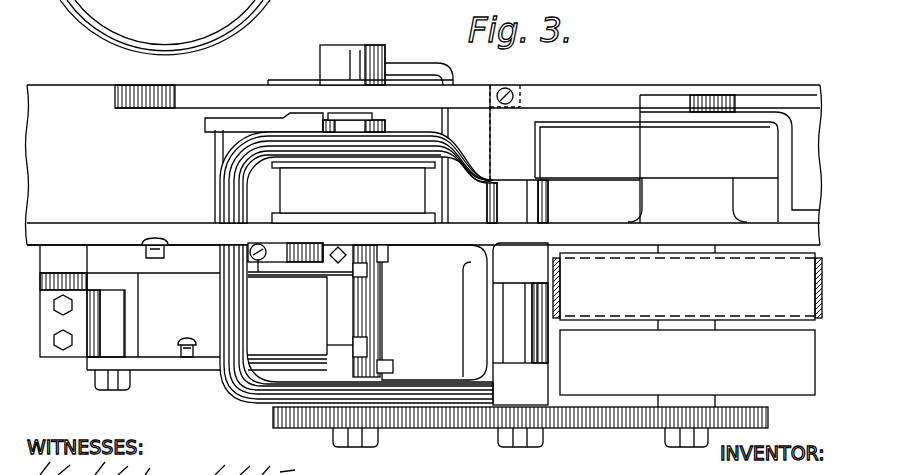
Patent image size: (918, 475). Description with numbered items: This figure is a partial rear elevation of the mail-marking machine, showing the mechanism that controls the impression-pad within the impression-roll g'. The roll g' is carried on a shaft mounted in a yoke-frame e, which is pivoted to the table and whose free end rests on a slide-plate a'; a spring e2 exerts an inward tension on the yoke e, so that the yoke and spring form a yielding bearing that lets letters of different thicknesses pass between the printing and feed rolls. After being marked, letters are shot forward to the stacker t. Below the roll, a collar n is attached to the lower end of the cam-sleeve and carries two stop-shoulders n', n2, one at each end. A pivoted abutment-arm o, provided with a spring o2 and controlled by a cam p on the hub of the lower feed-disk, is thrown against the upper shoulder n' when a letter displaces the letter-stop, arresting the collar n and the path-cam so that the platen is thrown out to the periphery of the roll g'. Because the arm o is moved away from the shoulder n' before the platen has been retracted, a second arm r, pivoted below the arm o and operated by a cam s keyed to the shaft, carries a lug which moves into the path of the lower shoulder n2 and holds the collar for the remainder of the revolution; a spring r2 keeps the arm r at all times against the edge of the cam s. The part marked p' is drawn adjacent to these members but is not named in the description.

The slide-plate a' is at (123, 290).
The yoke-frame e is at (228, 192).
The spring e2 is at (157, 240).
The impression-roll g' is at (353, 192).
The stacker t is at (656, 172).
The abutment-arm o is at (330, 268).
The spring o2 is at (265, 258).
The cam p is at (398, 255).
The arm p' is at (324, 331).
The collar n is at (420, 312).
The upper shoulder n' is at (389, 271).
The lower shoulder n2 is at (373, 347).
The cam s is at (393, 368).
The arm r is at (273, 362).
The spring r2 is at (186, 340).